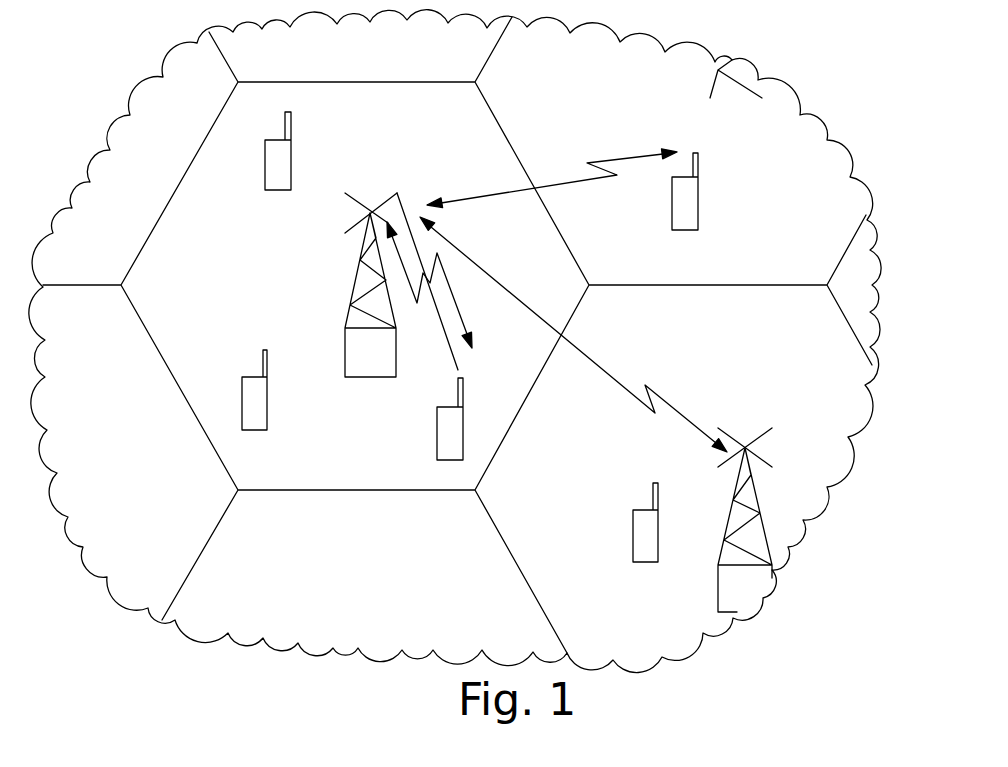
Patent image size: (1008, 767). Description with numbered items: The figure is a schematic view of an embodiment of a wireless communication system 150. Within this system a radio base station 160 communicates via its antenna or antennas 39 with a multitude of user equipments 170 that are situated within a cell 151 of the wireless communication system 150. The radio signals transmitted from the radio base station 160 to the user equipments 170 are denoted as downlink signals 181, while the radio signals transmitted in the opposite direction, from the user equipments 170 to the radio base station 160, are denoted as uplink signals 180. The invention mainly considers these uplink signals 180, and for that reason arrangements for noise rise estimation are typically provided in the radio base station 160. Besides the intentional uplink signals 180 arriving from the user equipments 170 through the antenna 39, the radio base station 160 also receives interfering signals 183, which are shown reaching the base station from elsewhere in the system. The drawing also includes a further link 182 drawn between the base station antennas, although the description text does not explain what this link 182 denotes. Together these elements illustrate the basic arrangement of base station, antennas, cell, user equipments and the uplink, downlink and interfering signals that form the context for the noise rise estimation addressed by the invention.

The antenna 39 is at (368, 210).
The wireless communication system 150 is at (357, 645).
The cell 151 is at (160, 310).
The radio base station 160 is at (353, 350).
The user equipment 170 is at (275, 178).
The uplink signals 180 is at (442, 333).
The downlink signals 181 is at (463, 307).
The inter-base-station link 182 is at (613, 380).
The interfering signals 183 is at (608, 157).